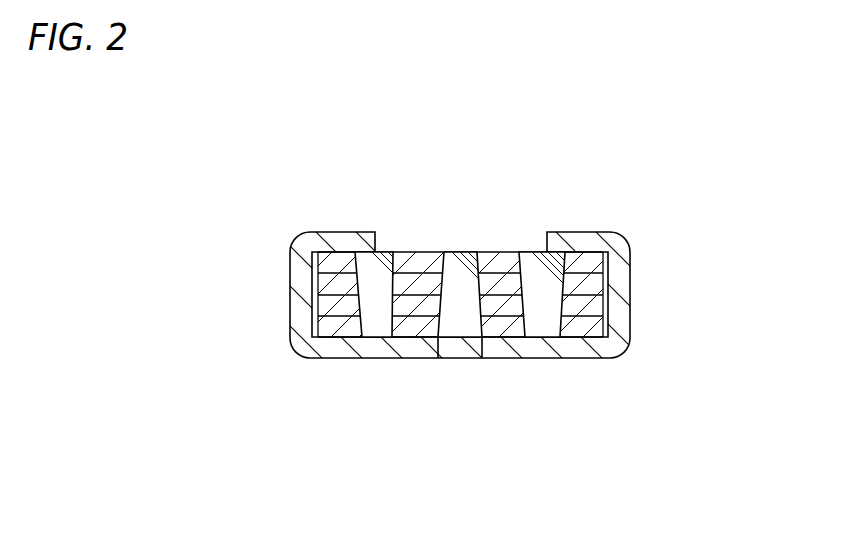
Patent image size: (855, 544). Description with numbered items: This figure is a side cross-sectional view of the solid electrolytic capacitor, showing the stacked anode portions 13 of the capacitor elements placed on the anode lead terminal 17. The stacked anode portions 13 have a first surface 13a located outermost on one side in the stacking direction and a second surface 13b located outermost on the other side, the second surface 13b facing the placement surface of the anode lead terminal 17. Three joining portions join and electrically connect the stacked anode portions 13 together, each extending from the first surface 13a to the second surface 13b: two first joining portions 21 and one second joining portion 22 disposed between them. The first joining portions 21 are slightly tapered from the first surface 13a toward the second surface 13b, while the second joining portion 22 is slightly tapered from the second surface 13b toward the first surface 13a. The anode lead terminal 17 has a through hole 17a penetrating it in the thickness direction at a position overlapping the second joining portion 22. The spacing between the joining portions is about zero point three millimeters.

The anode portion 13 is at (502, 246).
The first surface 13a is at (415, 252).
The second surface 13b is at (413, 337).
The anode lead terminal 17 is at (570, 358).
The through hole 17a is at (482, 347).
The first joining portion 21 is at (390, 252).
The second joining portion 22 is at (453, 338).